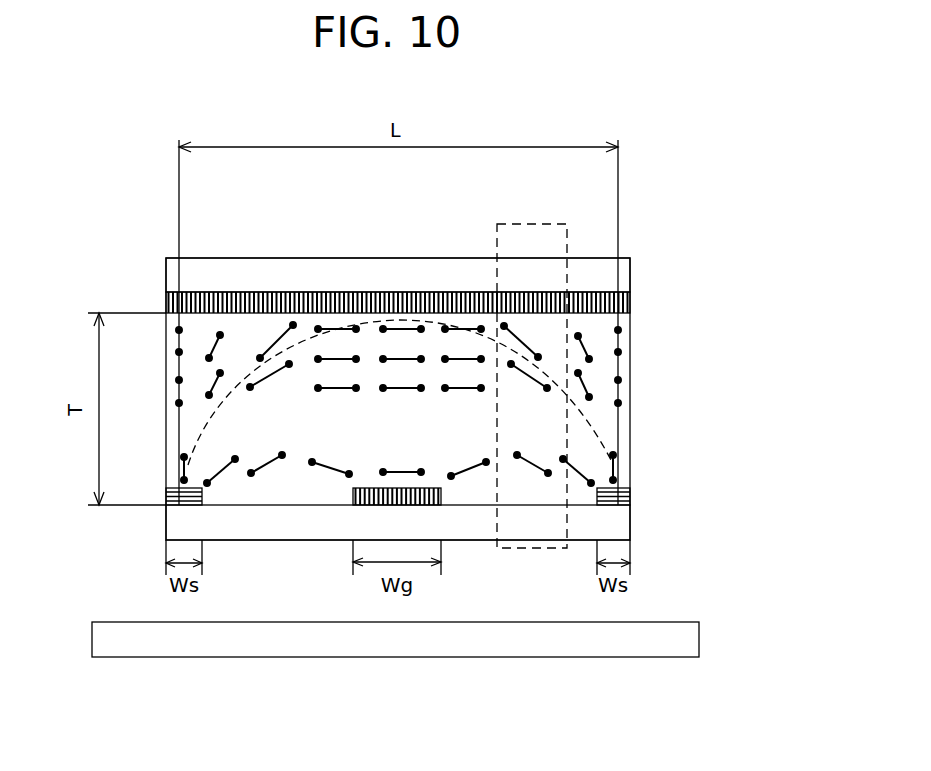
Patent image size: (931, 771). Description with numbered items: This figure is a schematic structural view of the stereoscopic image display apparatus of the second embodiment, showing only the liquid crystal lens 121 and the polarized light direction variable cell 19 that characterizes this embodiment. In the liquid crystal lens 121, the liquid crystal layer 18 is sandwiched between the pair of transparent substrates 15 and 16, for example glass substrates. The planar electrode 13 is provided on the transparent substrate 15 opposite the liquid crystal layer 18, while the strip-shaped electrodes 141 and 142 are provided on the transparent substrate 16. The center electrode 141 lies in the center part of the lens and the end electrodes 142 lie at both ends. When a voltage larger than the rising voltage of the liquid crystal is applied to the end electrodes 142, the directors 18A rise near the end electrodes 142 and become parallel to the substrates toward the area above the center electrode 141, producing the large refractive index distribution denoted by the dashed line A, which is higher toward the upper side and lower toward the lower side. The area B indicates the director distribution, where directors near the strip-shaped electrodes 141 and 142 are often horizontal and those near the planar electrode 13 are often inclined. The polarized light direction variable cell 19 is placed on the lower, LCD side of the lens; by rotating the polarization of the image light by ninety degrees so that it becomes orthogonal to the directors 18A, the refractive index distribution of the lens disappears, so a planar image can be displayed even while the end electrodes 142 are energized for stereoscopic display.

The planar electrode 13 is at (624, 298).
The transparent substrate 15 is at (624, 272).
The transparent substrate 16 is at (624, 530).
The liquid crystal layer 18 is at (166, 415).
The directors 18A is at (312, 466).
The polarized light direction variable cell 19 is at (700, 640).
The liquid crystal lens 121 is at (797, 348).
The strip-shaped electrode (center electrode) 141 is at (357, 508).
The strip-shaped electrodes (end electrodes) 142 is at (165, 507).
The refractive index distribution A is at (193, 445).
The area B is at (556, 222).